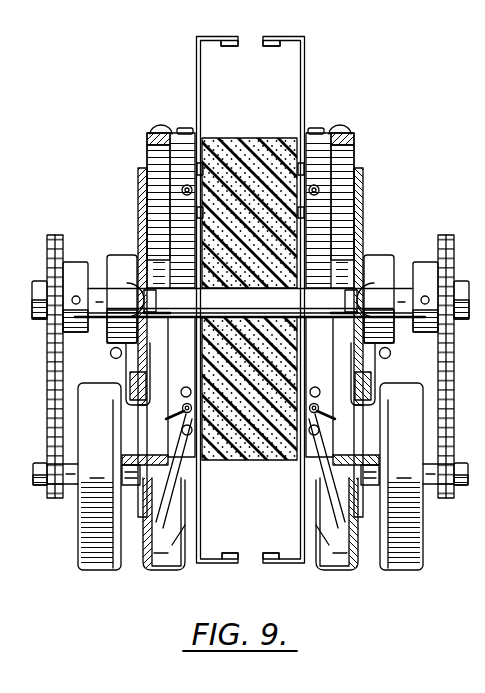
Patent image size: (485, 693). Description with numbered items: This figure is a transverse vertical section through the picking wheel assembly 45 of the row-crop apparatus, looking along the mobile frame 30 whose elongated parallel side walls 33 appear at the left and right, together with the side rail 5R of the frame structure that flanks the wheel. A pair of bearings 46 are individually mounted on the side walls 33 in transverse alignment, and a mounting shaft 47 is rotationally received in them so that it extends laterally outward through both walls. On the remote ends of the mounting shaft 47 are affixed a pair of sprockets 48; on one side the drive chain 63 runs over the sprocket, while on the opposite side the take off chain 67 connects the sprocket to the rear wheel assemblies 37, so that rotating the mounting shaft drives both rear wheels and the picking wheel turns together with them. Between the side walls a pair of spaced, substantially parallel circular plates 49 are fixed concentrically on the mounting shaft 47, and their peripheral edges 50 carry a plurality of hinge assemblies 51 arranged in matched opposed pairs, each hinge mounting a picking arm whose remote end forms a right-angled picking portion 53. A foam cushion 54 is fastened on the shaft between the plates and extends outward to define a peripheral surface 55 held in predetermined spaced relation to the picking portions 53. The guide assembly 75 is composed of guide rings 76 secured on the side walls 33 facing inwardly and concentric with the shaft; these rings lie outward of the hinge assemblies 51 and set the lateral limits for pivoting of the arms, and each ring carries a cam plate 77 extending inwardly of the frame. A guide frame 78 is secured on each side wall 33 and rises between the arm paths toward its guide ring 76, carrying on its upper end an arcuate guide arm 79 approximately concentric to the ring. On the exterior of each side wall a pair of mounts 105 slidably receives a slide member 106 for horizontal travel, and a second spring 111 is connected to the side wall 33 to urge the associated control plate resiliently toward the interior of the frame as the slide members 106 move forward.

The picking wheel assembly 45 is at (308, 43).
The side rail 5R is at (197, 82).
The picking portion 53 is at (233, 35).
The foam cushion 54 is at (251, 146).
The peripheral surface 55 is at (271, 460).
The peripheral edges 50 is at (206, 200).
The mobile frame 30 is at (145, 164).
The guide assembly 75 is at (358, 154).
The guide rings 76 is at (146, 148).
The cam plate 77 is at (174, 128).
The hinge assemblies 51 is at (182, 188).
The side walls 33 is at (139, 213).
The sprockets 48 is at (69, 262).
The bearings 46 is at (120, 262).
The second spring 111 is at (111, 353).
The drive chain 63 is at (48, 404).
The take off chain 67 is at (455, 500).
The mounting shaft 47 is at (180, 322).
The circular plates 49 is at (196, 355).
The slide member 106 is at (134, 374).
The mounts 105 is at (130, 402).
The guide frame 78 is at (146, 486).
The guide arm 79 is at (250, 492).
The rear wheel assemblies 37 is at (107, 570).